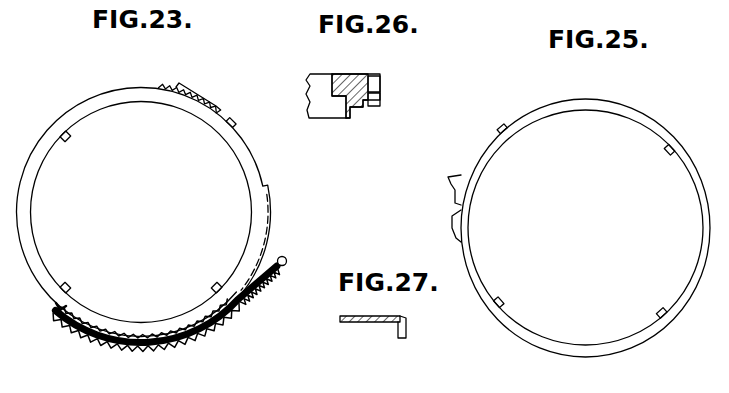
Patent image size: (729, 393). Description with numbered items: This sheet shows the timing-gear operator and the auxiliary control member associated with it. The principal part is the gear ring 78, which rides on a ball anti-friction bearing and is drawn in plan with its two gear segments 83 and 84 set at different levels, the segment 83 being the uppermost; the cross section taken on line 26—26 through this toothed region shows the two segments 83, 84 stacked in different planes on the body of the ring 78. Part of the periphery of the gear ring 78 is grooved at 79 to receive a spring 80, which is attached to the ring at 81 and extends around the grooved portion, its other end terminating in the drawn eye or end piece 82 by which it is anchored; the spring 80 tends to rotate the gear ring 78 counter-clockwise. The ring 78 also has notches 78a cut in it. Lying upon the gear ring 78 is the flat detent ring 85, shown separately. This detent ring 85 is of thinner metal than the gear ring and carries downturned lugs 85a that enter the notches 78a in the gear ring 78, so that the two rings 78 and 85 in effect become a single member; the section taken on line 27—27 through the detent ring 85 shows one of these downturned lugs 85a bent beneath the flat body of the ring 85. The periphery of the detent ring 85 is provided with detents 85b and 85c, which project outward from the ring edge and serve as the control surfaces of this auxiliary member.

In FIG. 23, the section line 26— 26 is at (209, 97).
In FIG. 25, the section line 27— 27 is at (513, 181).
In FIG. 23, the gear ring 78 is at (95, 103).
In FIG. 26, the gear ring 78 is at (310, 80).
In FIG. 23, the notches 78a is at (60, 288).
In FIG. 23, the groove 79 is at (272, 225).
In FIG. 23, the spring 80 is at (232, 314).
In FIG. 23, the spring attachment point 81 is at (58, 310).
In FIG. 23, the pin 82 is at (286, 258).
In FIG. 23, the gear segment 83 is at (152, 84).
In FIG. 26, the gear segment 83 is at (382, 82).
In FIG. 23, the gear segment 84 is at (215, 109).
In FIG. 26, the gear segment 84 is at (382, 99).
In FIG. 27, the detent ring 85 is at (358, 323).
In FIG. 25, the detent ring 85 is at (588, 101).
In FIG. 27, the downturned lugs 85a is at (408, 332).
In FIG. 25, the downturned lugs 85a is at (502, 301).
In FIG. 25, the detent 85b is at (478, 157).
In FIG. 25, the detent 85c is at (452, 216).